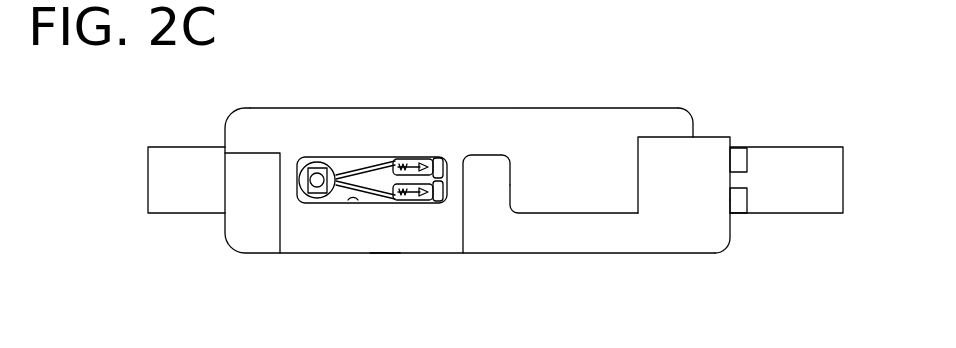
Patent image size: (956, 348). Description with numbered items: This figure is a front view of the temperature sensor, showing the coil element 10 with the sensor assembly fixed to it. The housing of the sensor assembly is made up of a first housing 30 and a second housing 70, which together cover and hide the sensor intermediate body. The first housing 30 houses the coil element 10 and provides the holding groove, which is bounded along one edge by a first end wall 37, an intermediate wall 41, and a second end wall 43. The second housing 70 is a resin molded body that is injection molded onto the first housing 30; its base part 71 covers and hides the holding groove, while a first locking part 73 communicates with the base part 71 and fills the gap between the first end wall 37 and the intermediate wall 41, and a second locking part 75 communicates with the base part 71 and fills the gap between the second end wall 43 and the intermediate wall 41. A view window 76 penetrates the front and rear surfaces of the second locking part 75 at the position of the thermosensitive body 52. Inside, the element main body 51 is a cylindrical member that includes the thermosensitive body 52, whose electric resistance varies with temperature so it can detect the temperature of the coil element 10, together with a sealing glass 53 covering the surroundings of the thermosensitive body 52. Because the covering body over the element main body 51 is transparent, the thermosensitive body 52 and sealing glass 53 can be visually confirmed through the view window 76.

The coil element 10 is at (790, 147).
The first housing 30 is at (713, 127).
The first end wall 37 is at (705, 253).
The intermediate wall 41 is at (462, 205).
The second end wall 43 is at (258, 253).
The element main body 51 is at (362, 158).
The thermosensitive body 52 is at (315, 190).
The sealing glass 53 is at (333, 199).
The second housing 70 is at (578, 98).
The base part 71 is at (470, 108).
The first locking part 73 is at (565, 214).
The second locking part 75 is at (385, 253).
The view window 76 is at (352, 203).